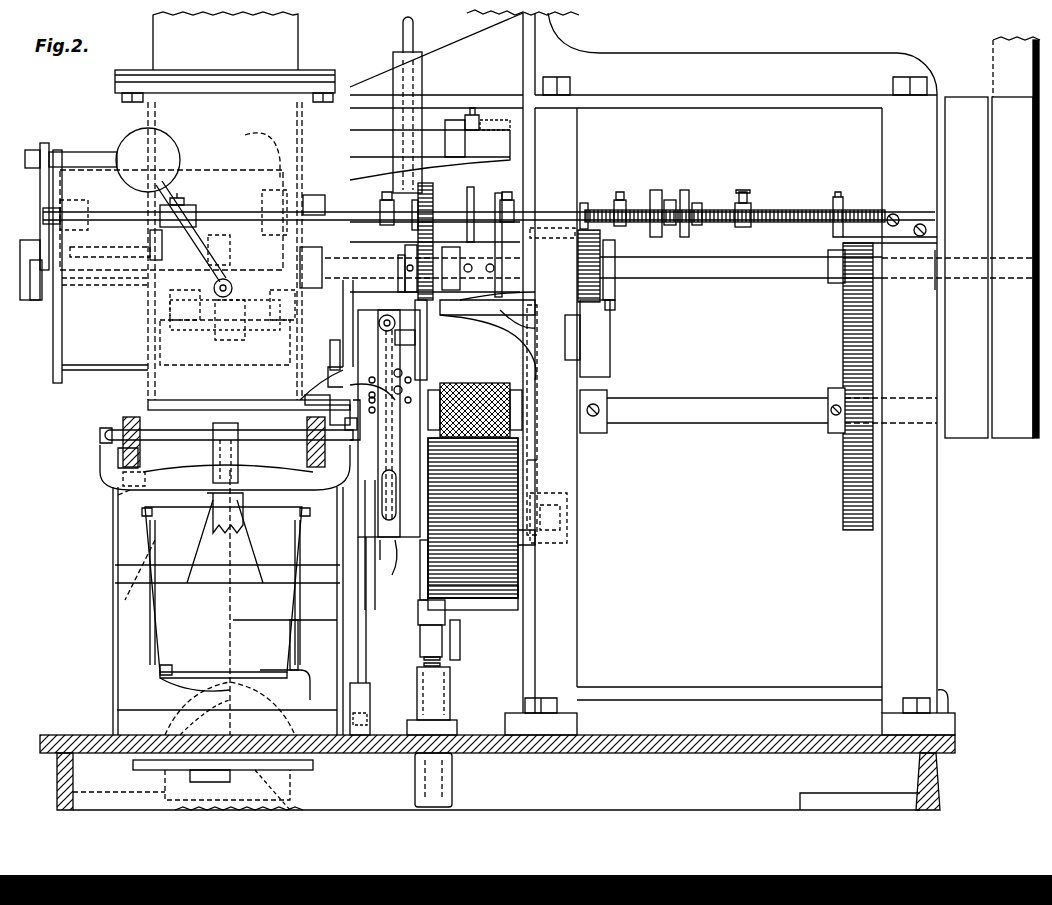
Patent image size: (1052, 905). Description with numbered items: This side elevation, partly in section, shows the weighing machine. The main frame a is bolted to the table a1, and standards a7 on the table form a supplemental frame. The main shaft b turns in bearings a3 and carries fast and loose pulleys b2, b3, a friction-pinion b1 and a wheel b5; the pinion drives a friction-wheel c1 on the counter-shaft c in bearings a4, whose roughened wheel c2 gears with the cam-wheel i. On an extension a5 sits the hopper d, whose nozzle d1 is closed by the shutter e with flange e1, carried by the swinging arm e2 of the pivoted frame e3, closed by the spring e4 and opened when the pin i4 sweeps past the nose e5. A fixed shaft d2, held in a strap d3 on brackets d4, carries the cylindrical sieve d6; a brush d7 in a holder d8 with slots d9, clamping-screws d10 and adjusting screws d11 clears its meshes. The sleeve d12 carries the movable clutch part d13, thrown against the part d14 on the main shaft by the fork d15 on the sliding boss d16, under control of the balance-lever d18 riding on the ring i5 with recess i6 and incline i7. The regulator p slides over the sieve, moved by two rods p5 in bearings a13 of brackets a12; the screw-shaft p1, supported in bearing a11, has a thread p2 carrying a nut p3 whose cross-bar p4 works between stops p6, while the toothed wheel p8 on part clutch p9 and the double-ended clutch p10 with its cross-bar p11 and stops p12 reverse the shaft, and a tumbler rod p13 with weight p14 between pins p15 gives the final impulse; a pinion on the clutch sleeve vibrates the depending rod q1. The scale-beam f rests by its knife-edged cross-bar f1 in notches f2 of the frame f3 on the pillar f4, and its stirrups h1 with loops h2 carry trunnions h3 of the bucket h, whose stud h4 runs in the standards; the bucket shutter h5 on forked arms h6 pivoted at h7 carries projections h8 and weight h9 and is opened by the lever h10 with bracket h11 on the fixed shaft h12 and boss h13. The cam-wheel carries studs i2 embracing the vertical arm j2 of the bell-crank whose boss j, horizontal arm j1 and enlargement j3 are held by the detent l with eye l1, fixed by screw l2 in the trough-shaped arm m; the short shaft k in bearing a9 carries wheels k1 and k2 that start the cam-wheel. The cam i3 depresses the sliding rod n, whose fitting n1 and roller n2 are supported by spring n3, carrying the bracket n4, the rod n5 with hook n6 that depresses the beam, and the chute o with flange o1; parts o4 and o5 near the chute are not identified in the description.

The main frame a is at (612, 124).
The base-plate or table a1 is at (85, 722).
The bearings a3 is at (575, 246).
The bearings a4 is at (540, 416).
The bracket or extension a5 is at (368, 78).
The standards a7 is at (113, 650).
The bearing a9 is at (428, 335).
The bearing a11 is at (620, 200).
The brackets a12 is at (843, 240).
The bearings a13 is at (838, 197).
The main shaft b is at (752, 278).
The friction-pinion b1 is at (830, 283).
The fast pulley b2 is at (960, 97).
The loose pulley b3 is at (993, 97).
The wheel b5 is at (612, 290).
The counter-shaft c is at (764, 398).
The friction-wheel c1 is at (845, 348).
The roughened wheel c2 is at (522, 400).
The hopper d is at (300, 40).
The nozzle d1 is at (160, 402).
The fixed shaft d2 is at (100, 290).
The strap d3 is at (44, 143).
The studs or brackets d4 is at (80, 160).
The cylindrical sieve d6 is at (258, 140).
The brush d7 is at (165, 338).
The holder d8 is at (160, 262).
The slots d9 is at (200, 325).
The clamping-screws d10 is at (140, 286).
The adjusting screws d11 is at (235, 228).
The sleeve d12 is at (405, 262).
The movable clutch part d13 is at (450, 240).
The fixed clutch part d14 is at (506, 284).
The fork d15 is at (532, 365).
The tubular boss or sleeve d16 is at (520, 310).
The balance-lever d18 is at (540, 485).
The arc-shaped shutter e is at (196, 424).
The upturned flange e1 is at (105, 428).
The swinging arm e2 is at (340, 238).
The frame e3 is at (452, 120).
The spring e4 is at (330, 412).
The nose e5 is at (350, 430).
The scale-beam f is at (104, 465).
The cross-bar f1 is at (123, 435).
The V-shaped notches f2 is at (118, 455).
The frame f3 is at (125, 482).
The pillar f4 is at (208, 515).
The bucket h is at (162, 640).
The straps or stirrups h1 is at (128, 496).
The eyes or loops h2 is at (346, 318).
The trunnions or studs h3 is at (118, 515).
The stud or projection h4 is at (298, 640).
The bucket shutter h5 is at (160, 672).
The forked arms h6 is at (152, 614).
The pivot h7 is at (147, 516).
The projections h8 is at (308, 668).
The weight h9 is at (178, 690).
The swinging arm or lever h10 is at (366, 616).
The bracket h11 is at (335, 370).
The fixed shaft h12 is at (300, 398).
The adjustable boss h13 is at (370, 690).
The cam-wheel i is at (482, 612).
The studs i2 is at (432, 470).
The cam i3 is at (428, 592).
The long pin i4 is at (420, 548).
The ring or cam i5 is at (462, 640).
The recess i6 is at (567, 500).
The incline i7 is at (535, 540).
The boss j is at (398, 570).
The horizontal arm j1 is at (382, 558).
The vertical arm j2 is at (405, 372).
The horizontal enlargement j3 is at (376, 398).
The short shaft k is at (610, 335).
The leather-covered wheel k1 is at (600, 366).
The roughened wheel k2 is at (412, 338).
The detent or support l is at (420, 378).
The eye l1 is at (396, 505).
The screw l2 is at (380, 318).
The trough-shaped arm m is at (350, 410).
The vertically-sliding rod n is at (452, 770).
The boss or fitting n1 is at (442, 640).
The roller n2 is at (445, 612).
The spring n3 is at (442, 662).
The branch or bracket n4 is at (218, 770).
The rod n5 is at (168, 606).
The hook n6 is at (213, 470).
The chute o is at (232, 790).
The flange o1 is at (135, 765).
The cam o4 is at (270, 706).
The link o5 is at (267, 790).
The regulator p is at (60, 330).
The screw-shaft p1 is at (540, 196).
The screw-thread p2 is at (668, 205).
The nut p3 is at (696, 208).
The strap or cross-bar p4 is at (690, 186).
The rods p5 is at (90, 220).
The adjustable stops p6 is at (742, 228).
The toothed wheel p8 is at (445, 182).
The part clutch p9 is at (472, 188).
The double-ended part clutch p10 is at (578, 178).
The strap or cross-bar p11 is at (500, 192).
The adjustable stops p12 is at (516, 205).
The tumbler rod p13 is at (175, 170).
The weight p14 is at (170, 138).
The pins p15 is at (196, 206).
The depending rod q1 is at (403, 30).